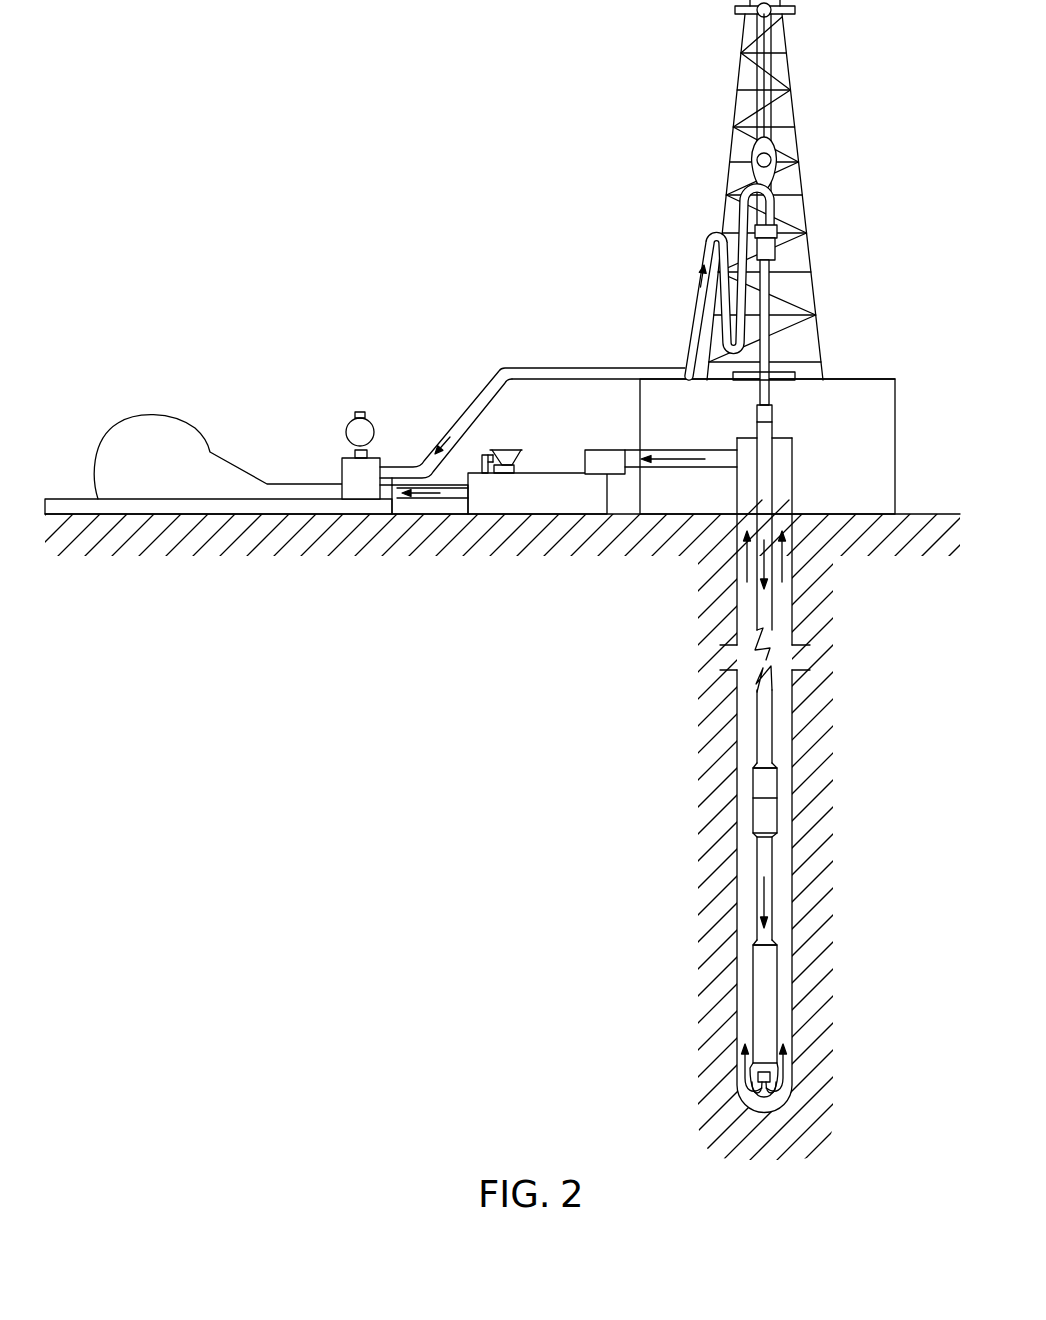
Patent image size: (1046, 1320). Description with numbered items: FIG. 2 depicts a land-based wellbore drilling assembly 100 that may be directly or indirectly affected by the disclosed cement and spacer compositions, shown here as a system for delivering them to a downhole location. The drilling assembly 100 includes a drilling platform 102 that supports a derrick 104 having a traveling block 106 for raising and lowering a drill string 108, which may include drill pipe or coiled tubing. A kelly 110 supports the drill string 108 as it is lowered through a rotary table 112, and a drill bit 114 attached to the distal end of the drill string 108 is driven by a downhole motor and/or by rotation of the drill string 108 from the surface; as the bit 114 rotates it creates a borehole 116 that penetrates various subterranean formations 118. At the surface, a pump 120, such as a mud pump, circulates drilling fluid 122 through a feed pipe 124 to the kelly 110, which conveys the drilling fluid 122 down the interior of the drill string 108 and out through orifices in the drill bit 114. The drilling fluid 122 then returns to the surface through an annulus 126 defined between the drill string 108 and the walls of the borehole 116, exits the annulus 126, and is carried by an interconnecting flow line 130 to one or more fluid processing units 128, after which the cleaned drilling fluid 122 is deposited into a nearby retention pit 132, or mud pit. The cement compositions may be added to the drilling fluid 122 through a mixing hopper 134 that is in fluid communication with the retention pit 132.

The wellbore drilling assembly 100 is at (631, 190).
The drilling platform 102 is at (897, 392).
The derrick 104 is at (793, 93).
The traveling block 106 is at (778, 152).
The drill string 108 is at (768, 623).
The kelly 110 is at (771, 283).
The rotary table 112 is at (796, 378).
The drill bit 114 is at (778, 1086).
The borehole 116 is at (792, 722).
The subterranean formations 118 is at (620, 760).
The pump 120 is at (168, 478).
The drilling fluid 122 is at (413, 466).
The feed pipe 124 is at (522, 368).
The annulus 126 is at (782, 895).
The fluid processing unit 128 is at (602, 450).
The flow line 130 is at (718, 467).
The retention pit 132 is at (587, 503).
The mixing hopper 134 is at (503, 456).